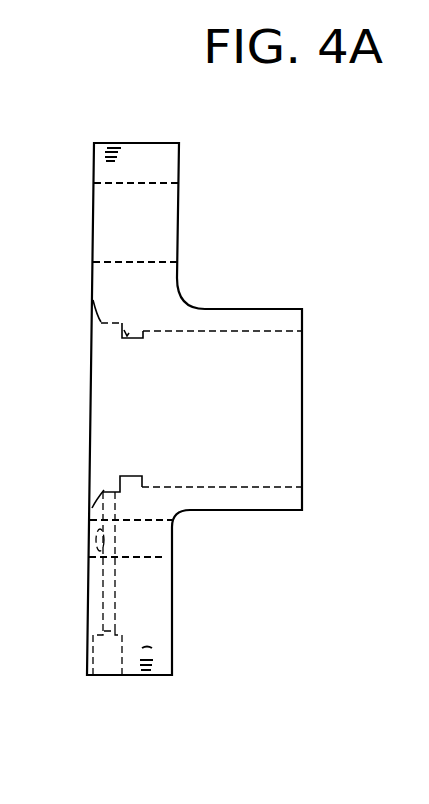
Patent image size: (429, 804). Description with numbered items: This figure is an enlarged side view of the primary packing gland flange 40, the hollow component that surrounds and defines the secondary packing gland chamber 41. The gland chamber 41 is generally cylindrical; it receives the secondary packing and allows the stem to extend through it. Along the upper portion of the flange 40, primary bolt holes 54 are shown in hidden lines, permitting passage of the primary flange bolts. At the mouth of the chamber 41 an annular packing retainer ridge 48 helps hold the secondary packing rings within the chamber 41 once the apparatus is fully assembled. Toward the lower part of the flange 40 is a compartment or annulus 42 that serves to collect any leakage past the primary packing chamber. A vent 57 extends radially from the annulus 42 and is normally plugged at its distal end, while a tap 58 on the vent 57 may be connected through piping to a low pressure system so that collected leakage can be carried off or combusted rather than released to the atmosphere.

The primary packing gland flange 40 is at (289, 241).
The secondary packing gland chamber 41 is at (232, 437).
The primary bolt holes 54 is at (150, 187).
The annular packing retainer ridge 48 is at (118, 340).
The annulus 42 is at (107, 477).
The vent 57 is at (108, 596).
The tap 58 is at (155, 557).